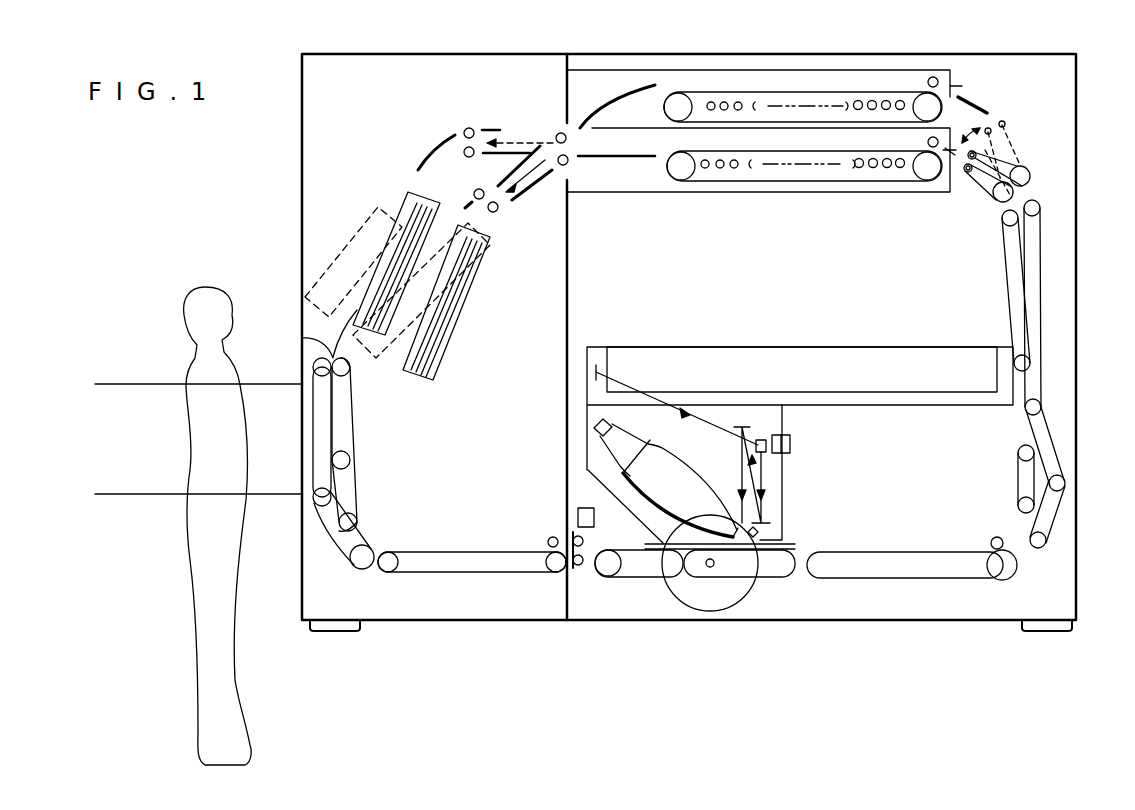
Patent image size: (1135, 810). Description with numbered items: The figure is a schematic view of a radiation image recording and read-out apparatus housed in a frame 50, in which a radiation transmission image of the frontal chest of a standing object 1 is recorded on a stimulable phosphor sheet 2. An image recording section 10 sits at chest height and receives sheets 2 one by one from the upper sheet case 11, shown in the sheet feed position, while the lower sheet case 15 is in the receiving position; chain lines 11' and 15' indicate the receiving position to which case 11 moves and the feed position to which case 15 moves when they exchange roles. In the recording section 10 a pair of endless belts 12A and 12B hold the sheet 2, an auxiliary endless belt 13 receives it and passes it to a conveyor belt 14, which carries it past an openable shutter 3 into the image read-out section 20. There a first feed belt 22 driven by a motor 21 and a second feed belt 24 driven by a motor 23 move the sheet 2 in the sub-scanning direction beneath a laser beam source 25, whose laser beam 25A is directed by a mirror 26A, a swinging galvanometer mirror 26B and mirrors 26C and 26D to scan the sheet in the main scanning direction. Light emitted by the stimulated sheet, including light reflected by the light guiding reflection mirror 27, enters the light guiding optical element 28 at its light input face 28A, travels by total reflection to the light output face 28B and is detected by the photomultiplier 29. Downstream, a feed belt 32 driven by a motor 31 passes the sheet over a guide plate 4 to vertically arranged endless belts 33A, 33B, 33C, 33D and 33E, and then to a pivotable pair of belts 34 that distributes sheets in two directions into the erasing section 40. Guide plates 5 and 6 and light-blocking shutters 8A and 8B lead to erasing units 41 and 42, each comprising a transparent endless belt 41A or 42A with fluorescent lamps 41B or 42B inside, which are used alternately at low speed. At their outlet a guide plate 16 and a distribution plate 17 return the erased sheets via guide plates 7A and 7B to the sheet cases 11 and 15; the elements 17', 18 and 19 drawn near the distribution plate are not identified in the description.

The object 1 is at (180, 300).
The stimulable phosphor sheet 2 is at (305, 350).
The openable shutter 3 is at (572, 540).
The guide plate 4 is at (1018, 548).
The guide plate 5 is at (988, 112).
The guide plate 6 is at (958, 160).
The guide plate 7A is at (603, 108).
The guide plate 7B is at (615, 160).
The shutter 8A is at (945, 86).
The shutter 8B is at (933, 150).
The image recording section 10 is at (367, 455).
The sheet case 11 is at (396, 255).
The chain line 11' is at (353, 261).
The endless belt 12A is at (313, 420).
The endless belt 12B is at (352, 425).
The auxiliary endless belt 13 is at (345, 540).
The conveyor belt 14 is at (485, 574).
The sheet case 15 is at (456, 302).
The chain line 15' is at (421, 312).
The guide plate 16 is at (500, 208).
The distribution plate 17 is at (540, 129).
The feed path arrows 17' is at (534, 178).
The guide roller 18 is at (483, 212).
The deflecting guide and rollers 19 is at (436, 150).
The image read-out section 20 is at (762, 600).
The motor 21 is at (598, 577).
The first feed belt 22 is at (650, 578).
The motor 23 is at (735, 605).
The second feed belt 24 is at (790, 578).
The laser beam source 25 is at (780, 347).
The laser beam 25A is at (700, 412).
The mirror 26A is at (596, 372).
The galvanometer mirror 26B is at (782, 435).
The mirror 26C is at (766, 525).
The mirror 26D is at (757, 438).
The light guiding reflection mirror 27 is at (760, 532).
The light guiding optical element 28 is at (700, 490).
The light input face 28A is at (725, 568).
The light output face 28B is at (652, 448).
The photomultiplier 29 is at (588, 508).
The motor 31 is at (1013, 575).
The feed belt 32 is at (900, 578).
The endless belt 33A is at (1052, 522).
The endless belt 33B is at (1050, 450).
The endless belt 33C is at (1042, 250).
The endless belt 33D is at (1006, 270).
The endless belt 33E is at (1018, 470).
The pair of belts 34 is at (1018, 165).
The erasing section 40 is at (872, 68).
The erasing unit 41 is at (808, 95).
The transparent endless belt 41A is at (770, 94).
The fluorescent lamps 41B is at (738, 100).
The erasing unit 42 is at (835, 182).
The transparent endless belt 42A is at (770, 182).
The fluorescent lamps 42B is at (720, 170).
The frame 50 is at (620, 54).